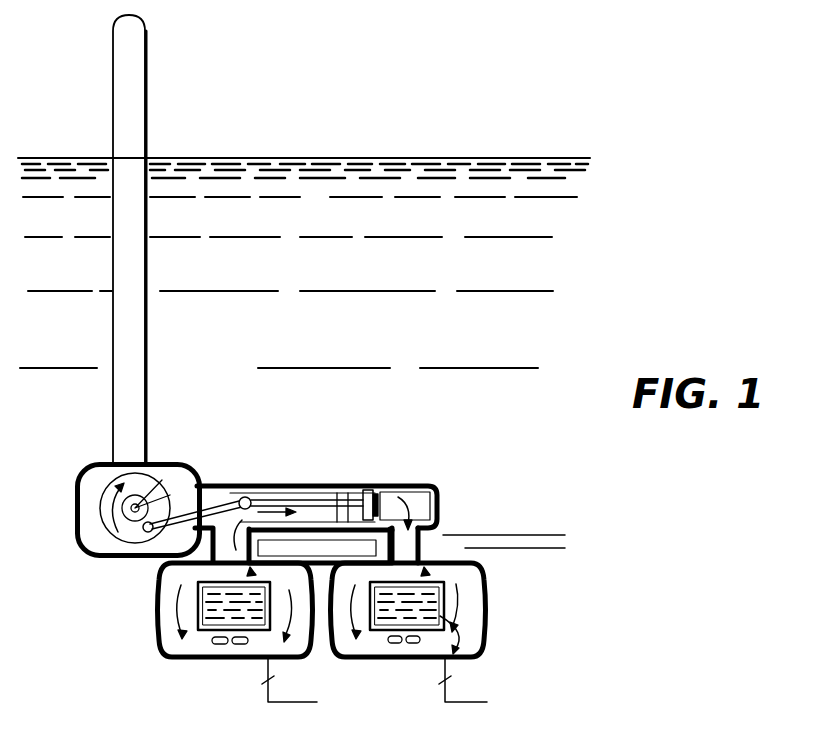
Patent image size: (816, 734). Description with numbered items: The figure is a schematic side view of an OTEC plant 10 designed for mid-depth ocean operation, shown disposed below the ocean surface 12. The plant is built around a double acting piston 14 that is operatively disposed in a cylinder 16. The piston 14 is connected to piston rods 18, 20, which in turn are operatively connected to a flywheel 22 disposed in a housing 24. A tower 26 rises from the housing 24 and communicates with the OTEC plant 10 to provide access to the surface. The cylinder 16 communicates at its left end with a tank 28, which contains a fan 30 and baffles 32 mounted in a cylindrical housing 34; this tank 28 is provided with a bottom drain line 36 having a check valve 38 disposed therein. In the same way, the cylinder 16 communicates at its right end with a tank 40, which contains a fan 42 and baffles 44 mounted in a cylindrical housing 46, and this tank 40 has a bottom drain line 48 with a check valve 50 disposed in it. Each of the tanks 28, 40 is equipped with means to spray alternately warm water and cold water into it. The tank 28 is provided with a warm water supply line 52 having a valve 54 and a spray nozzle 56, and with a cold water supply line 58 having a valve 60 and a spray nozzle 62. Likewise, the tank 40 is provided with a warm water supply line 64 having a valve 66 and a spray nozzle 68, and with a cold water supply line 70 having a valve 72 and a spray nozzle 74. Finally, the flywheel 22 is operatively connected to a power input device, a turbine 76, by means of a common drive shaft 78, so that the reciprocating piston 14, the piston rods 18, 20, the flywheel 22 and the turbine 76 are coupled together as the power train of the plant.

The OTEC plant 10 is at (205, 422).
The ocean surface 12 is at (308, 161).
The double acting piston 14 is at (384, 486).
The cylinder 16 is at (247, 485).
The piston rod 18 is at (298, 520).
The piston rod 20 is at (211, 485).
The flywheel 22 is at (194, 476).
The housing 24 is at (78, 486).
The tower 26 is at (146, 72).
The tank 28 is at (158, 604).
The fan 30 is at (222, 645).
The baffles 32 is at (197, 615).
The cylindrical housing 34 is at (188, 655).
The bottom drain line 36 is at (290, 702).
The check valve 38 is at (262, 682).
The tank 40 is at (484, 606).
The fan 42 is at (398, 648).
The baffles 44 is at (472, 645).
The cylindrical housing 46 is at (466, 624).
The bottom drain line 48 is at (464, 702).
The check valve 50 is at (440, 682).
The warm water supply line 52 is at (330, 498).
The valve 54 is at (299, 521).
The spray nozzle 56 is at (280, 543).
The cold water supply line 58 is at (366, 489).
The valve 60 is at (292, 556).
The spray nozzle 62 is at (278, 573).
The warm water supply line 64 is at (535, 535).
The valve 66 is at (446, 544).
The spray nozzle 68 is at (419, 545).
The cold water supply line 70 is at (547, 550).
The valve 72 is at (468, 549).
The spray nozzle 74 is at (459, 608).
The turbine 76 is at (114, 466).
The common drive shaft 78 is at (140, 505).